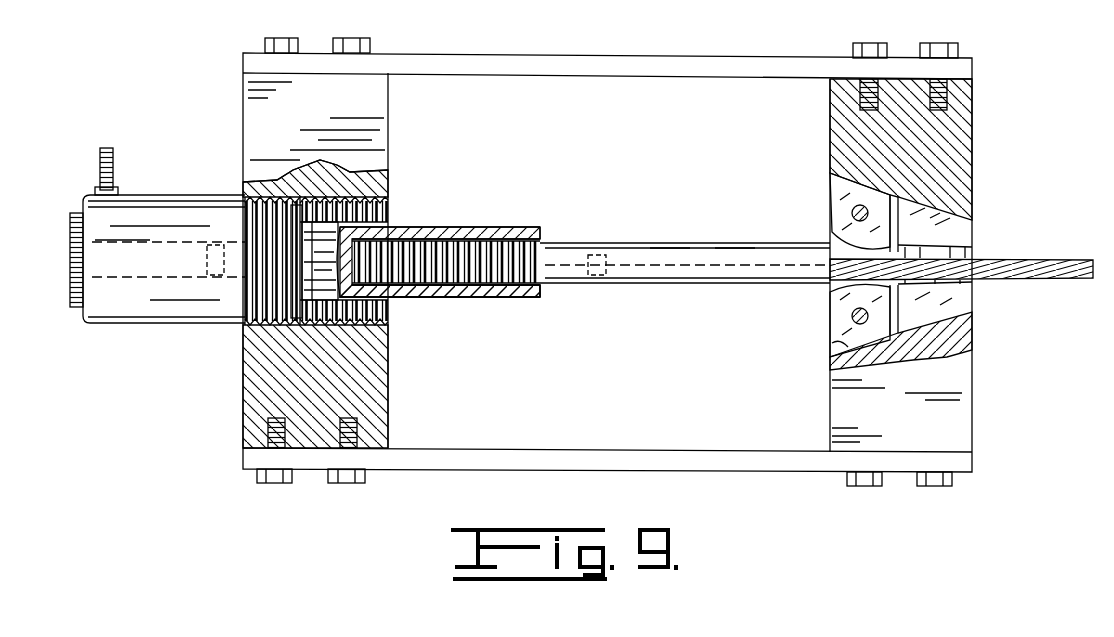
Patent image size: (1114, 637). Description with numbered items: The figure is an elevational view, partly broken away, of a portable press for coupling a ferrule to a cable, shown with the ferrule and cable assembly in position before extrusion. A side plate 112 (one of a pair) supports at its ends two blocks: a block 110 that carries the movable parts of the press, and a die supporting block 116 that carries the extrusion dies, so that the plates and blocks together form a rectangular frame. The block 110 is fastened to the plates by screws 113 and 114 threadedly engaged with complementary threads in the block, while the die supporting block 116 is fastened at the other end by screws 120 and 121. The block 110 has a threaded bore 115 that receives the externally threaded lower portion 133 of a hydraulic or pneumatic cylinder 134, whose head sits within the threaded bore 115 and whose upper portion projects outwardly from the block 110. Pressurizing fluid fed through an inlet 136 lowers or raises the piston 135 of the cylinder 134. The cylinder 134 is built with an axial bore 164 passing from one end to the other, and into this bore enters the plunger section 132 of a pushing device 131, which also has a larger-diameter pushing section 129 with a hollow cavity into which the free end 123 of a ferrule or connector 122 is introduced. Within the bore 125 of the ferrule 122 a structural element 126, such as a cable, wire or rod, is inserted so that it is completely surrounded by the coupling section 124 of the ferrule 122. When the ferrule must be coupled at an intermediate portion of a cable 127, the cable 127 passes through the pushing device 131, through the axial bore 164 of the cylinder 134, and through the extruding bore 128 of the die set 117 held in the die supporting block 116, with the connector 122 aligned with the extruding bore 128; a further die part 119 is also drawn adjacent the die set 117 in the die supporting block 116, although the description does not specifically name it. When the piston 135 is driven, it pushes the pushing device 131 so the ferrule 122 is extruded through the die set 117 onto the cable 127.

The block 110 is at (252, 407).
The side plate 112 is at (612, 60).
The screws 113 is at (347, 485).
The screws 114 is at (352, 38).
The threaded bore 115 is at (363, 212).
The die supporting block 116 is at (975, 340).
The die set 117 is at (838, 318).
The jaw lip 119 is at (848, 347).
The screws 120 is at (930, 488).
The screws 121 is at (940, 43).
The ferrule or connector 122 is at (568, 246).
The free end of the ferrule 123 is at (466, 247).
The coupling section 124 is at (733, 248).
The bore of the ferrule 125 is at (594, 270).
The structural element 126 is at (665, 270).
The cable 127 is at (1050, 239).
The extruding bore 128 is at (830, 242).
The pushing section 129 is at (500, 292).
The pushing device 131 is at (318, 240).
The plunger section 132 is at (222, 245).
The externally threaded lower portion 133 is at (257, 287).
The hydraulic or pneumatic cylinder 134 is at (145, 196).
The piston 135 is at (297, 323).
The inlet 136 is at (112, 160).
The axial bore 164 is at (125, 268).